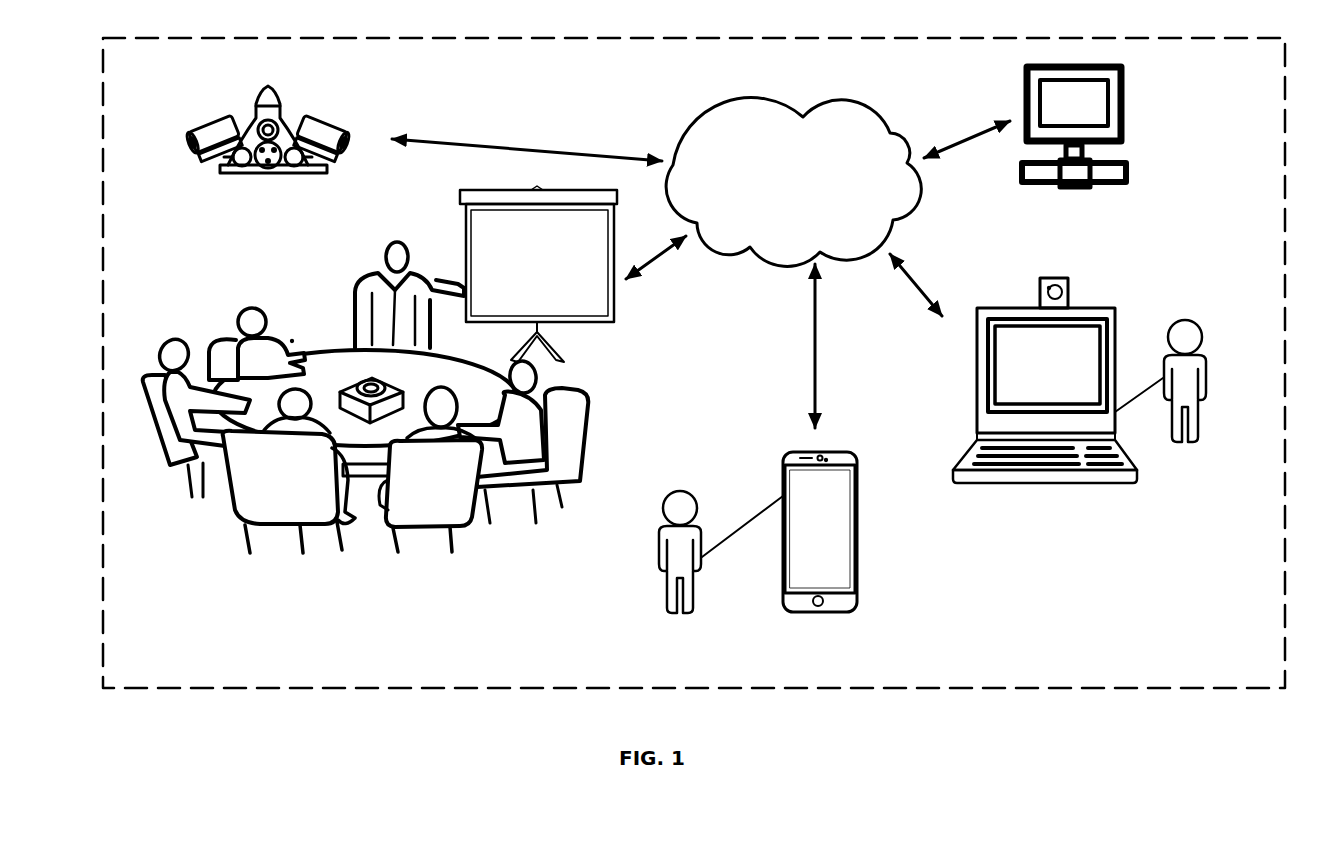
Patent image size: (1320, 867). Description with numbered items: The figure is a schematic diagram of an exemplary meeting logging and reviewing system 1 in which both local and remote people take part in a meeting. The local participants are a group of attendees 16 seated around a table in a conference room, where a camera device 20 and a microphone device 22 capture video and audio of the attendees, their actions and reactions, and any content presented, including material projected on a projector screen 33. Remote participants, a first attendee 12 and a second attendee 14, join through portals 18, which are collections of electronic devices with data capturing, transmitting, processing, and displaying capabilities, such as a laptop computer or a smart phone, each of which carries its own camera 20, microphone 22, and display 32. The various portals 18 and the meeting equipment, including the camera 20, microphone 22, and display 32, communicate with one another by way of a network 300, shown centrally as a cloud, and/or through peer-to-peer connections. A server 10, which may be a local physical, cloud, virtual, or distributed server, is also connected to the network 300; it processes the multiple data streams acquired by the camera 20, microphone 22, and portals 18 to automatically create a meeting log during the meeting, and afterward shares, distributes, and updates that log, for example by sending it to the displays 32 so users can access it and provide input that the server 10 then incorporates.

The video conferencing system 1 is at (946, 26).
The server 10 is at (1130, 113).
The first attendee 12 is at (1208, 390).
The second attendee 14 is at (658, 555).
The group of attendees 16 is at (193, 558).
The portal 18 is at (1118, 322).
The camera device 20 is at (233, 100).
The microphone device 22 is at (1040, 287).
The display 32 is at (1034, 377).
The projector screen 33 is at (526, 272).
The network 300 is at (780, 193).